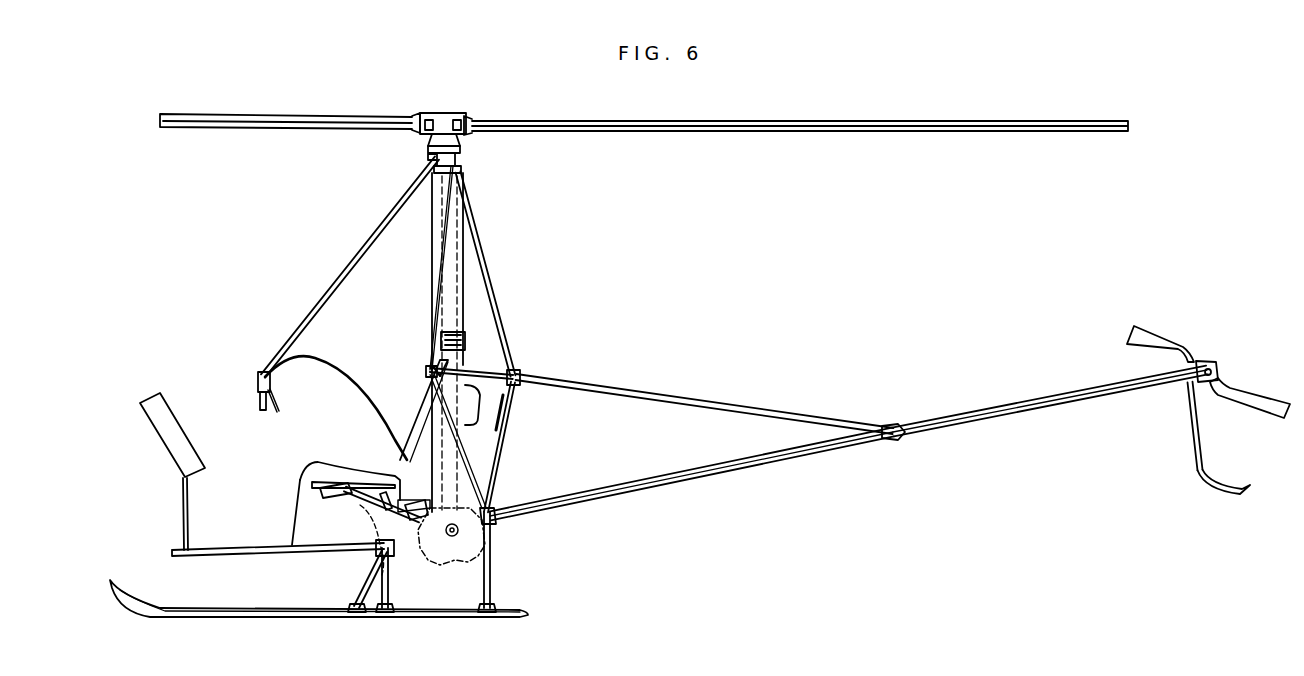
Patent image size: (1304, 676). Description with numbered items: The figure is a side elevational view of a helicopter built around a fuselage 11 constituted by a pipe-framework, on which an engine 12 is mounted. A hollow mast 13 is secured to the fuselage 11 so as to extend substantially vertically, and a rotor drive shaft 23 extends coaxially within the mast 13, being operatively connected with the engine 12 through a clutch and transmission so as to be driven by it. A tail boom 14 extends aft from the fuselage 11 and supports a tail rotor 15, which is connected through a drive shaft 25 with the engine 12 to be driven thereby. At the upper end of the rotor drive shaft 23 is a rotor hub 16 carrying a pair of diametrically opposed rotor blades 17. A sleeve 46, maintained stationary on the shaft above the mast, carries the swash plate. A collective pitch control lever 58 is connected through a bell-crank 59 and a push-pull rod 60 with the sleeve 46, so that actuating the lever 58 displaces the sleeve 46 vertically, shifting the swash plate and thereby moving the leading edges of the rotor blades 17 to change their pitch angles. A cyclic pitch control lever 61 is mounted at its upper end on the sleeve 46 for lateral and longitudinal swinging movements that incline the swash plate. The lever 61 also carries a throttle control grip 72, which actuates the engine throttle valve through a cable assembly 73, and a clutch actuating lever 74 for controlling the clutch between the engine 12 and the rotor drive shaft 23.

The fuselage 11 is at (334, 548).
The engine 12 is at (382, 462).
The hollow mast 13 is at (462, 296).
The tail boom 14 is at (858, 450).
The tail rotor 15 is at (1162, 345).
The rotor hub 16 is at (444, 116).
The rotor blades 17 is at (281, 116).
The rotor drive shaft 23 is at (467, 344).
The drive shaft 25 is at (678, 490).
The sleeve 46 is at (455, 155).
The collective pitch control lever 58 is at (348, 510).
The bell-crank 59 is at (410, 548).
The push-pull rod 60 is at (428, 352).
The cyclic pitch control lever 61 is at (325, 292).
The throttle control grip 72 is at (262, 402).
The cable assembly 73 is at (322, 358).
The clutch actuating lever 74 is at (275, 398).